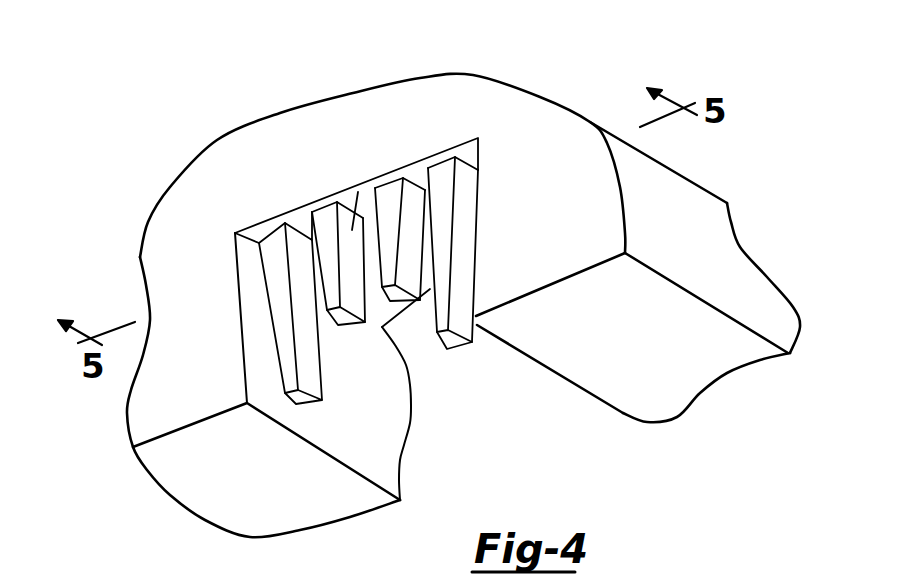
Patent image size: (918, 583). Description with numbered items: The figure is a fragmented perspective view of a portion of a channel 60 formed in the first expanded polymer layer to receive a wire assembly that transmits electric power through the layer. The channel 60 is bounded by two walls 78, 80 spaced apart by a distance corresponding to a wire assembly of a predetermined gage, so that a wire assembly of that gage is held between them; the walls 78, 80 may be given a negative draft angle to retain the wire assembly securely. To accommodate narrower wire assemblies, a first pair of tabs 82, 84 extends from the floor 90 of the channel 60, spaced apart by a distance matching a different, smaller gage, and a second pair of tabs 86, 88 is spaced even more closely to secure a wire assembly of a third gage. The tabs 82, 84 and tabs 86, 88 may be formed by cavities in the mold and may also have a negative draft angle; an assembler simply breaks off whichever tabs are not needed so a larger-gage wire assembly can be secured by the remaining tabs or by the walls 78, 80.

The channel 60 is at (554, 444).
The wall 78 is at (510, 345).
The wall 80 is at (402, 462).
The first pair of tabs 82 is at (296, 404).
The first pair of tabs 84 is at (460, 350).
The second pair of tabs 86 is at (402, 300).
The second pair of tabs 88 is at (350, 320).
The floor 90 is at (352, 230).